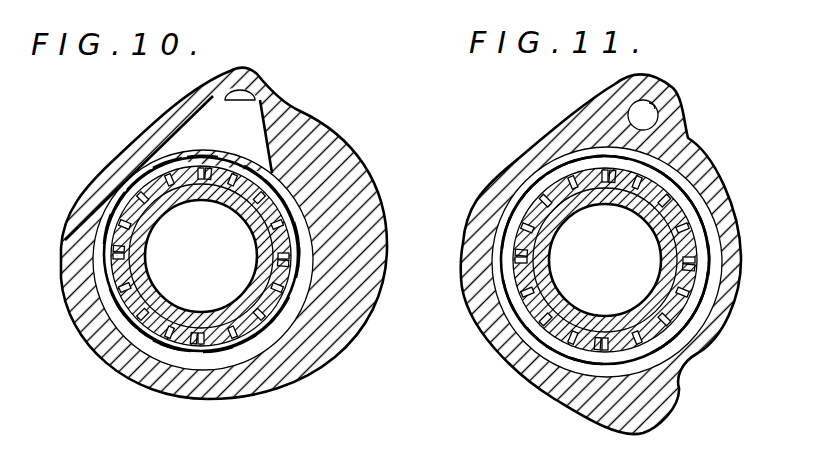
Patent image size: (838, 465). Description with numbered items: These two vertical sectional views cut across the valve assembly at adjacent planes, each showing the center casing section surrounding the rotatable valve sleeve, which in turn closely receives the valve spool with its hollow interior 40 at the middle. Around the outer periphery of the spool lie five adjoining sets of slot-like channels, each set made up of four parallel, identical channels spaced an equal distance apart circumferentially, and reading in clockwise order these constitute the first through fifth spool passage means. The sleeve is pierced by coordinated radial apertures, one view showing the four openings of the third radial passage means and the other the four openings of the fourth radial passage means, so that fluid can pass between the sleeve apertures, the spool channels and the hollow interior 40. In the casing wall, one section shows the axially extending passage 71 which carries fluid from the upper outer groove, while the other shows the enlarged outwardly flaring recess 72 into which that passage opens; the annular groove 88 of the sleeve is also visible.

In FIG. 10, the hollow interior 40 is at (170, 279).
In FIG. 11, the hollow interior 40 is at (572, 280).
In FIG. 11, the axially extending passage 71 is at (650, 97).
In FIG. 10, the enlarged outwardly flaring recess 72 is at (245, 86).
In FIG. 10, the annular groove 88 is at (222, 153).